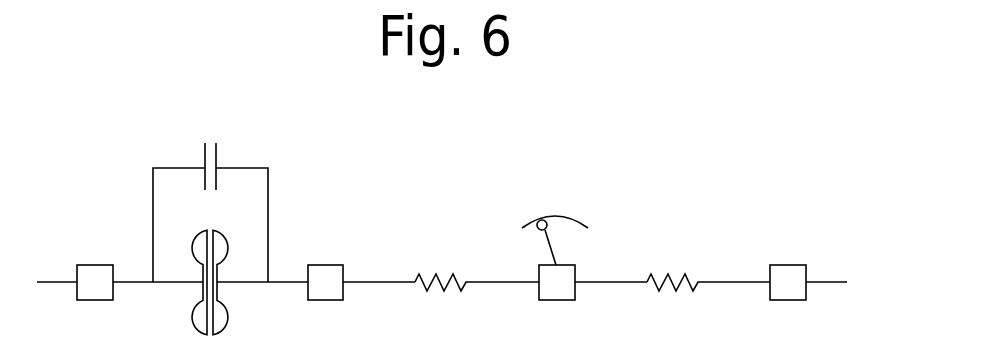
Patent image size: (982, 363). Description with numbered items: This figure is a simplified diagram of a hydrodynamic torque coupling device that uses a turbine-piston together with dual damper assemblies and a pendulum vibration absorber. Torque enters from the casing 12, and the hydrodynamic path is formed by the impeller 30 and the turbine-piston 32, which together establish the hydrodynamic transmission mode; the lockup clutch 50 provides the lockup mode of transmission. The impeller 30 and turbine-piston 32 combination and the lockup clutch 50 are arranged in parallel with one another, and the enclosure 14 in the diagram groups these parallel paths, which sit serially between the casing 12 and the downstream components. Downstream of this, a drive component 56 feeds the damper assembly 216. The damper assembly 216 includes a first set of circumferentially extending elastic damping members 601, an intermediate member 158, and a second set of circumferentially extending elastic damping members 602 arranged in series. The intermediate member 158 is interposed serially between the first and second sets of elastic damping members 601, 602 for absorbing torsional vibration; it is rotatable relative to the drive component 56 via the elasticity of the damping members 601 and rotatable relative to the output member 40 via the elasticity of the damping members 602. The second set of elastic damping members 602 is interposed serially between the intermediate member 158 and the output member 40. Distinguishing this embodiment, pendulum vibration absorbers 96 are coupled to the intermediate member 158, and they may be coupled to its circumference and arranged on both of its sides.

The casing 12 is at (95, 265).
The MEMS resonator 14 is at (181, 228).
The lockup clutch 50 is at (235, 146).
The impeller 30 is at (195, 320).
The turbine-piston 32 is at (226, 320).
The drive component 56 is at (330, 265).
The first set of circumferentially extending elastic damping members 601 is at (433, 291).
The intermediate member 158 is at (557, 295).
The pendulum vibration absorbers 96 is at (572, 210).
The damper assembly 216 is at (626, 251).
The second set of circumferentially extending elastic damping members 602 is at (668, 291).
The output member 40 is at (788, 265).